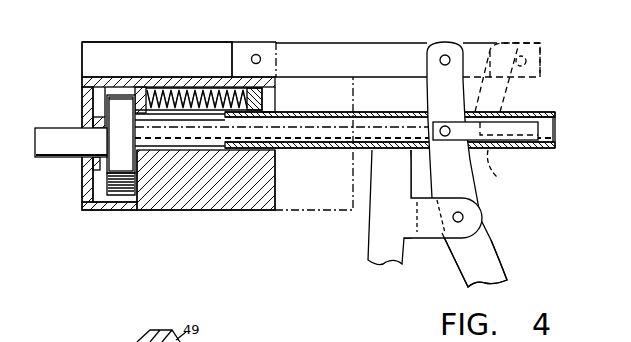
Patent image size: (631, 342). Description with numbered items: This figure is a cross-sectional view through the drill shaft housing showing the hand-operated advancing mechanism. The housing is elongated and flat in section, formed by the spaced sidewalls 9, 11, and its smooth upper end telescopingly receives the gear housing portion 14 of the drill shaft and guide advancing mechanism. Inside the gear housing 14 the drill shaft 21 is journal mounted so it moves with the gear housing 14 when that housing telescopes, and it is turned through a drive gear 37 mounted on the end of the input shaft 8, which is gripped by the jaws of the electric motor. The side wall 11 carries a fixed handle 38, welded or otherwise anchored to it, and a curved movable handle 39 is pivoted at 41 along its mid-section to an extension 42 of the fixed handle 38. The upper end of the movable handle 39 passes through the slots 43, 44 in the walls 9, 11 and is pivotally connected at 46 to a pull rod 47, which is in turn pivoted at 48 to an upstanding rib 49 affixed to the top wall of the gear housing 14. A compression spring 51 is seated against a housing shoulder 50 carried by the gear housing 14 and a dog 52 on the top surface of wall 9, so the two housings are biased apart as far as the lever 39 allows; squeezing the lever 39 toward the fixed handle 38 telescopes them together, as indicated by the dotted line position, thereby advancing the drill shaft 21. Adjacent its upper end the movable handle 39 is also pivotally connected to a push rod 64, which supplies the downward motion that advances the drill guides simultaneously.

The input shaft 8 is at (55, 153).
The housing side wall 9 is at (552, 113).
The housing side wall 11 is at (552, 150).
The gear housing portion 14 is at (224, 210).
The drill shaft 21 is at (186, 130).
The drive gear 37 is at (118, 195).
The fixed handle 38 is at (378, 245).
The movable handle 39 is at (485, 268).
The pivot 41 is at (463, 217).
The extension 42 is at (432, 232).
The slot 43 is at (500, 111).
The slot 44 is at (502, 171).
The pivotal connection 46 is at (448, 58).
The pull rod 47 is at (316, 52).
The pivot 48 is at (258, 54).
The upstanding rib 49 is at (160, 48).
The housing shoulder 50 is at (141, 92).
The compression spring 51 is at (184, 88).
The dog 52 is at (260, 99).
The push rod 64 is at (533, 132).